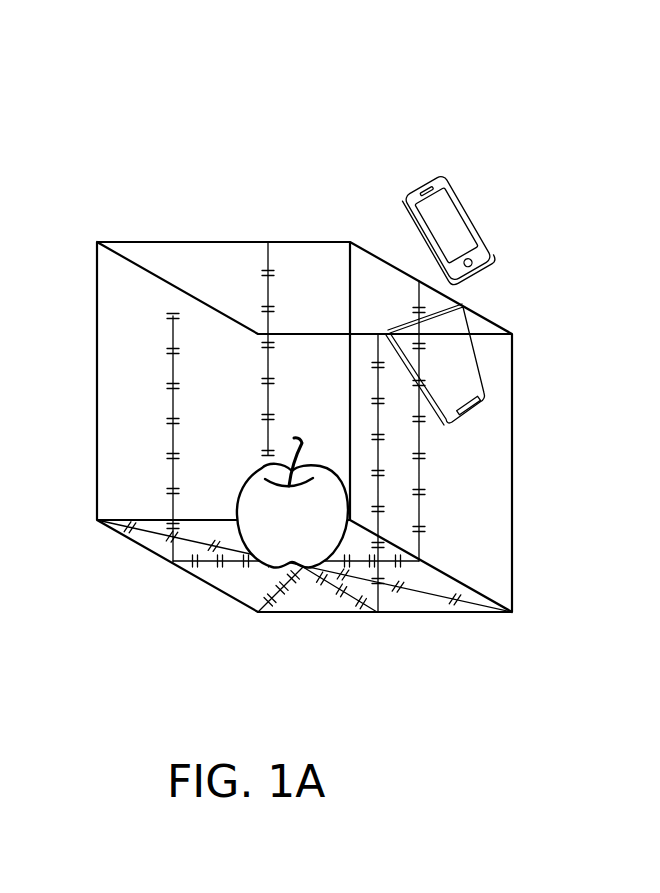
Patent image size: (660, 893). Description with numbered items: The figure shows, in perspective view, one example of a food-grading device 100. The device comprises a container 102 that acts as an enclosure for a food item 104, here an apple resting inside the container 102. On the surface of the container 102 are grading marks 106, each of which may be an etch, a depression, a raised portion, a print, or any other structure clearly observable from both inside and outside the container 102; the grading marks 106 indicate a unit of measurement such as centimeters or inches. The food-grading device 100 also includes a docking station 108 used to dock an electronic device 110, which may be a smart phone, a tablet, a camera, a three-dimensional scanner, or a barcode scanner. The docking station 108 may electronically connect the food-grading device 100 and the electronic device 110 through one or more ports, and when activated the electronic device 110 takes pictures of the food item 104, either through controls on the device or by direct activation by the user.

The food-grading device 100 is at (316, 80).
The container 102 is at (513, 525).
The food item 104 is at (283, 476).
The grading marks 106 is at (262, 273).
The docking station 108 is at (509, 349).
The electronic device 110 is at (494, 258).